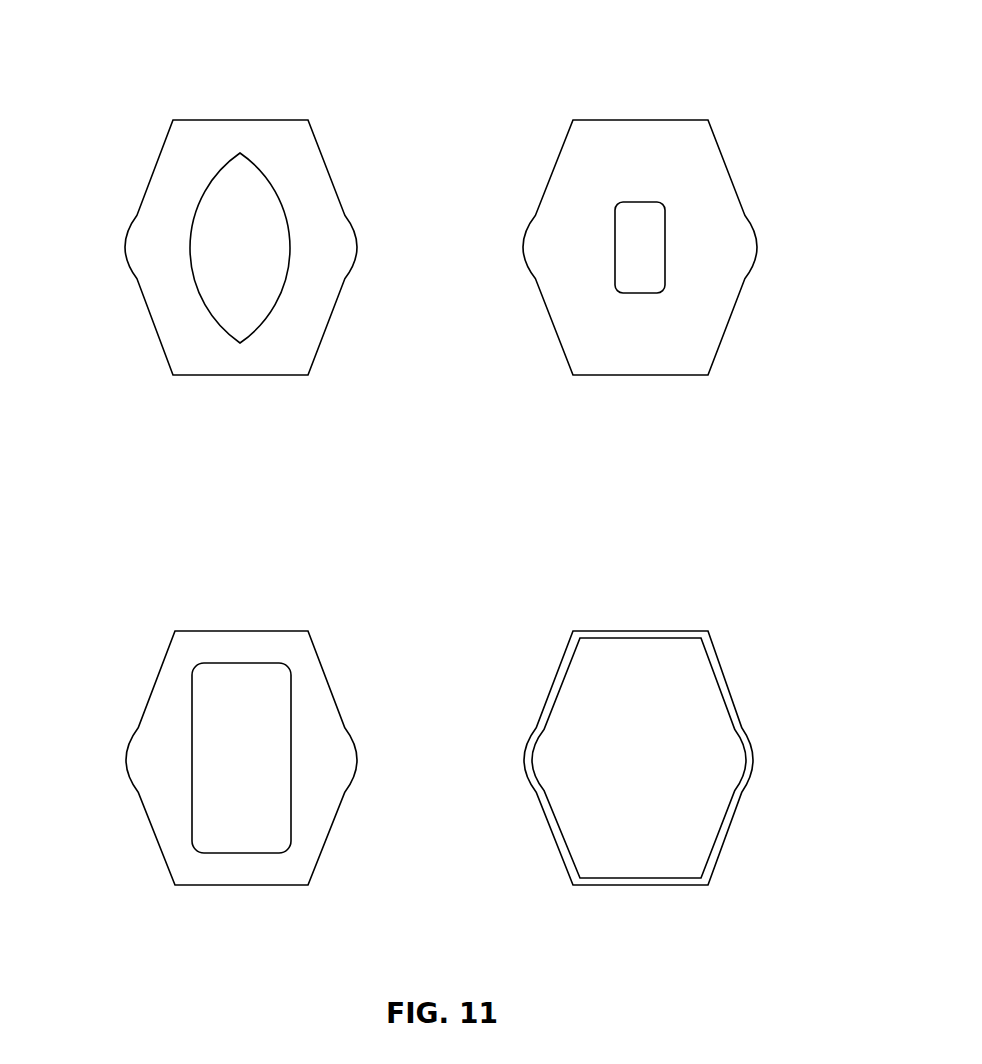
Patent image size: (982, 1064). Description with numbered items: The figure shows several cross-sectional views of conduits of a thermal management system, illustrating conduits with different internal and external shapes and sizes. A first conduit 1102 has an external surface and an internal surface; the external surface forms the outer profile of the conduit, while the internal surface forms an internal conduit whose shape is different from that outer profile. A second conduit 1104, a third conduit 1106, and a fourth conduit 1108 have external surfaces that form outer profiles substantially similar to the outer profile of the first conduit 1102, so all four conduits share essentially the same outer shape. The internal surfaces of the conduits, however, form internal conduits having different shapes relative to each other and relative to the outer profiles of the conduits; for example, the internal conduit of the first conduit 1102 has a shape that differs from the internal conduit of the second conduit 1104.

The first conduit 1102 is at (178, 73).
The second conduit 1104 is at (702, 72).
The third conduit 1106 is at (760, 650).
The fourth conduit 1108 is at (129, 851).